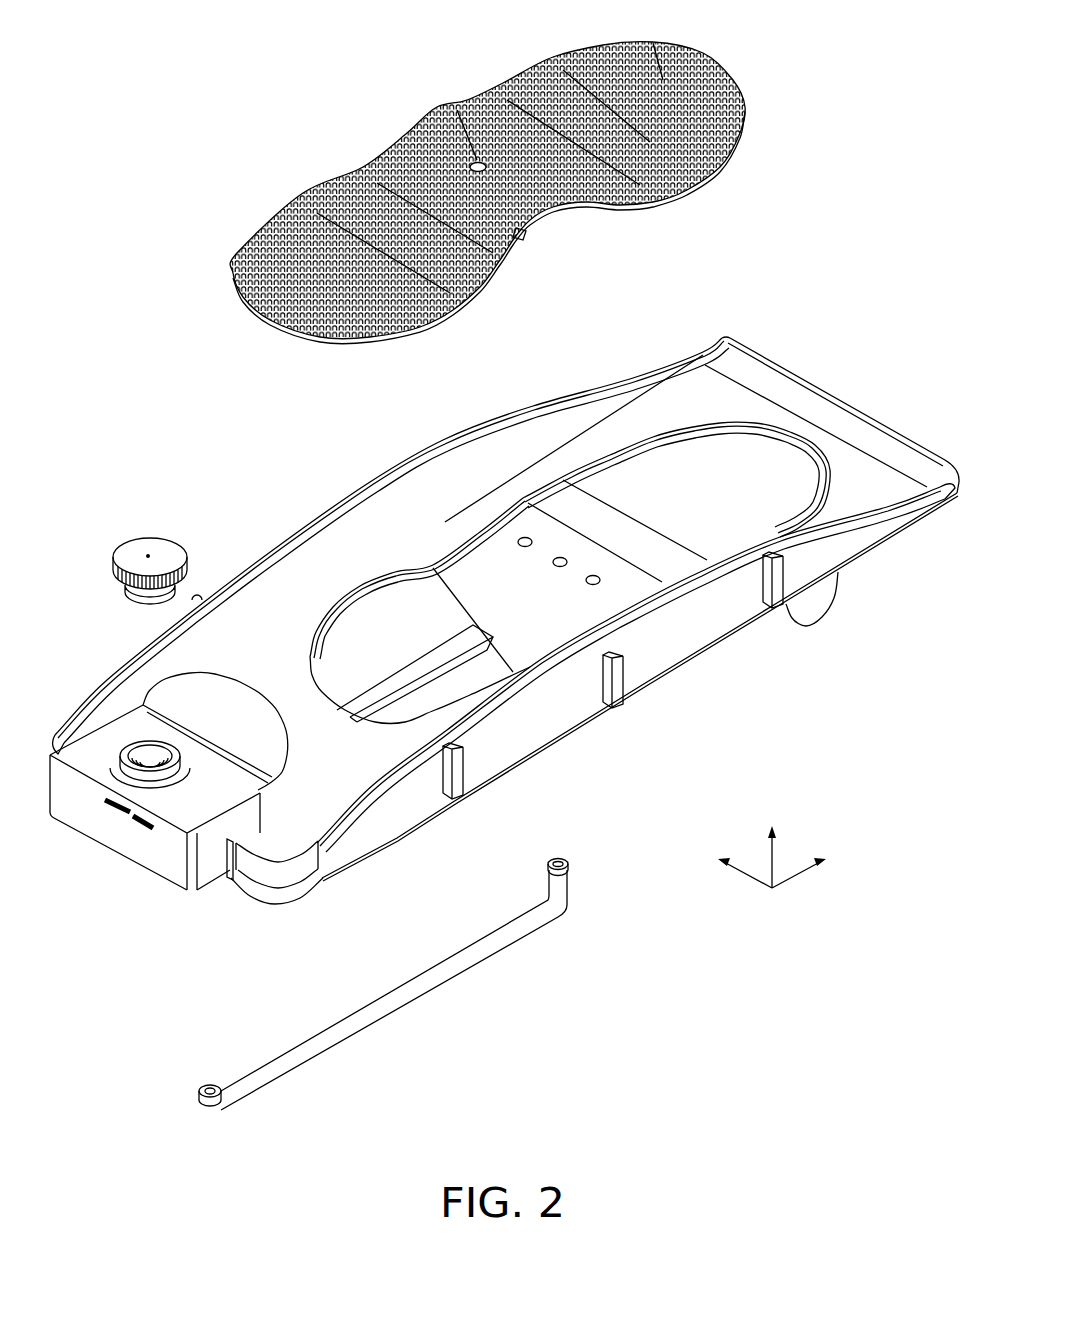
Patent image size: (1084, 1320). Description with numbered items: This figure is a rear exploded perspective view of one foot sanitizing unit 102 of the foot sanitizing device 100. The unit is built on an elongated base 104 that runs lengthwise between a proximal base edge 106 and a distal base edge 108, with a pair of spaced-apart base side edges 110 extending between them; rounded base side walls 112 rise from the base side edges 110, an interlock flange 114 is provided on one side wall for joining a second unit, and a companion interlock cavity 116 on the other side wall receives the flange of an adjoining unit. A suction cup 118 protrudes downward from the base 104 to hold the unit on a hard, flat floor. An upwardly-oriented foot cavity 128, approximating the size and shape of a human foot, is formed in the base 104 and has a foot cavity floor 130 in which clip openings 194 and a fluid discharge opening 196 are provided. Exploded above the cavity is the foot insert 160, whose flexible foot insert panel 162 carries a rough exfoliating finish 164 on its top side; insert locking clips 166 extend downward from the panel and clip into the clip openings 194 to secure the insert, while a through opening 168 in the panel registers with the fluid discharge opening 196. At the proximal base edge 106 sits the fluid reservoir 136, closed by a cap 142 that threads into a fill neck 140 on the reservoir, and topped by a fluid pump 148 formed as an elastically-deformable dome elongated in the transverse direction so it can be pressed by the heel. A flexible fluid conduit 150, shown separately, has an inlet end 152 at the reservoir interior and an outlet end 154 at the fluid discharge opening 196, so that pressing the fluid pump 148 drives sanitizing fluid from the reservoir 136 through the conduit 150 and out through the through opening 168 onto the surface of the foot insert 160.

The foot sanitizing device 100 is at (207, 92).
The foot sanitizing unit 102 is at (301, 498).
The base 104 is at (397, 840).
The proximal base edge 106 is at (229, 882).
The distal base edge 108 is at (847, 388).
The base side edges 110 is at (574, 735).
The base side walls 112 is at (440, 463).
The interlock flange 114 is at (786, 580).
The interlock cavity 116 is at (199, 594).
The suction cup 118 is at (812, 606).
The foot cavity 128 is at (607, 458).
The foot cavity floor 130 is at (694, 455).
The fluid reservoir 136 is at (121, 860).
The fill neck 140 is at (134, 745).
The cap 142 is at (133, 545).
The fluid pump 148 is at (228, 690).
The fluid conduit 150 is at (384, 1005).
The inlet end 152 is at (198, 1088).
The outlet end 154 is at (572, 863).
The foot insert 160 is at (229, 266).
The foot insert panel 162 is at (747, 82).
The exfoliating finish 164 is at (667, 52).
The insert locking clip 166 is at (527, 238).
The through opening 168 is at (467, 100).
The clip opening 194 is at (520, 538).
The fluid discharge opening 196 is at (561, 558).